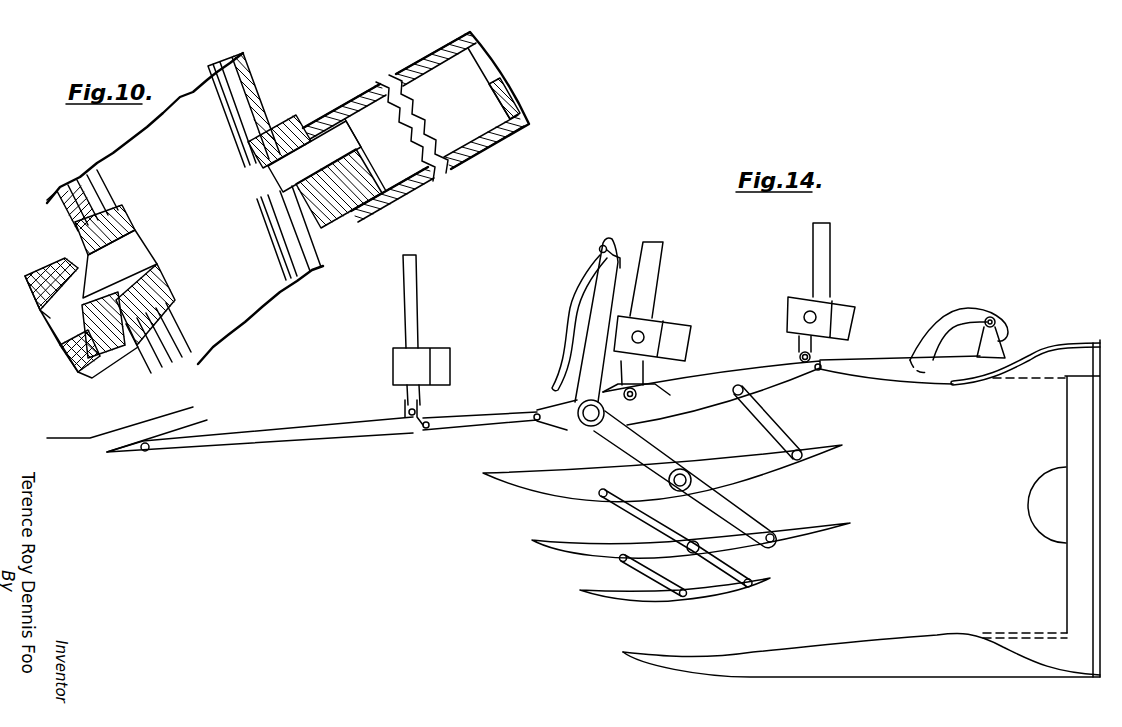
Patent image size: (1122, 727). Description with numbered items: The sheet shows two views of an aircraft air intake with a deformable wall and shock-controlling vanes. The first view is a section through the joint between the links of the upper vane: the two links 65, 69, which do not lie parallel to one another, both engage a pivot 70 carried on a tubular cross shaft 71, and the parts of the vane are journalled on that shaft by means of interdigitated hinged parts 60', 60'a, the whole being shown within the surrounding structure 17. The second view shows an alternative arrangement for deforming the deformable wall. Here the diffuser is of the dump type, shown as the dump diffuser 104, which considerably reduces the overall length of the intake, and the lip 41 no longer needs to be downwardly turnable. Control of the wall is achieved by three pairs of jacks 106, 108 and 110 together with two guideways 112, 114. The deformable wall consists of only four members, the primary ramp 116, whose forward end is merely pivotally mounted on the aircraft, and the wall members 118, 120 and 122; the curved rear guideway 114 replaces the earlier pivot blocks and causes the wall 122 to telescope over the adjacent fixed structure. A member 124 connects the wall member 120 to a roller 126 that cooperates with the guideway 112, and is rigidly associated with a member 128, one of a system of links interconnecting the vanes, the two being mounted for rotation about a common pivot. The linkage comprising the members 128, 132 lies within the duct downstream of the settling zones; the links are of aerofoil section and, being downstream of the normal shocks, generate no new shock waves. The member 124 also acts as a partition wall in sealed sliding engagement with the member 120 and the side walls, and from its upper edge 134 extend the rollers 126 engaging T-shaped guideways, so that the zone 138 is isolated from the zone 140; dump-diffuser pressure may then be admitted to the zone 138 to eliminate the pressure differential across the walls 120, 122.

In FIG. 10, the tubular member 17 is at (185, 208).
In FIG. 10, the link 65 is at (250, 98).
In FIG. 10, the link 69 is at (317, 260).
In FIG. 10, the pivot 70 is at (297, 197).
In FIG. 10, the tubular cross shaft 71 is at (82, 357).
In FIG. 10, the interdigitated hinged part 60' is at (314, 208).
In FIG. 10, the interdigitated hinged part 60'a is at (523, 114).
In FIG. 14, the dump diffuser 104 is at (946, 488).
In FIG. 14, the lip 41 is at (725, 664).
In FIG. 14, the jack 106 is at (413, 281).
In FIG. 14, the jack 108 is at (650, 297).
In FIG. 14, the jack 110 is at (817, 263).
In FIG. 14, the guideway 112 is at (587, 271).
In FIG. 14, the curved rear guideway 114 is at (950, 322).
In FIG. 14, the primary ramp 116 is at (217, 442).
In FIG. 14, the wall member 118 is at (473, 420).
In FIG. 14, the wall member 120 is at (707, 393).
In FIG. 14, the wall 122 is at (880, 373).
In FIG. 14, the member 124 is at (590, 367).
In FIG. 14, the roller 126 is at (601, 246).
In FIG. 14, the member 128 is at (643, 441).
In FIG. 14, the link 132 is at (760, 413).
In FIG. 14, the upper edge 134 is at (616, 257).
In FIG. 14, the zone 138 is at (768, 275).
In FIG. 14, the zone 140 is at (520, 336).